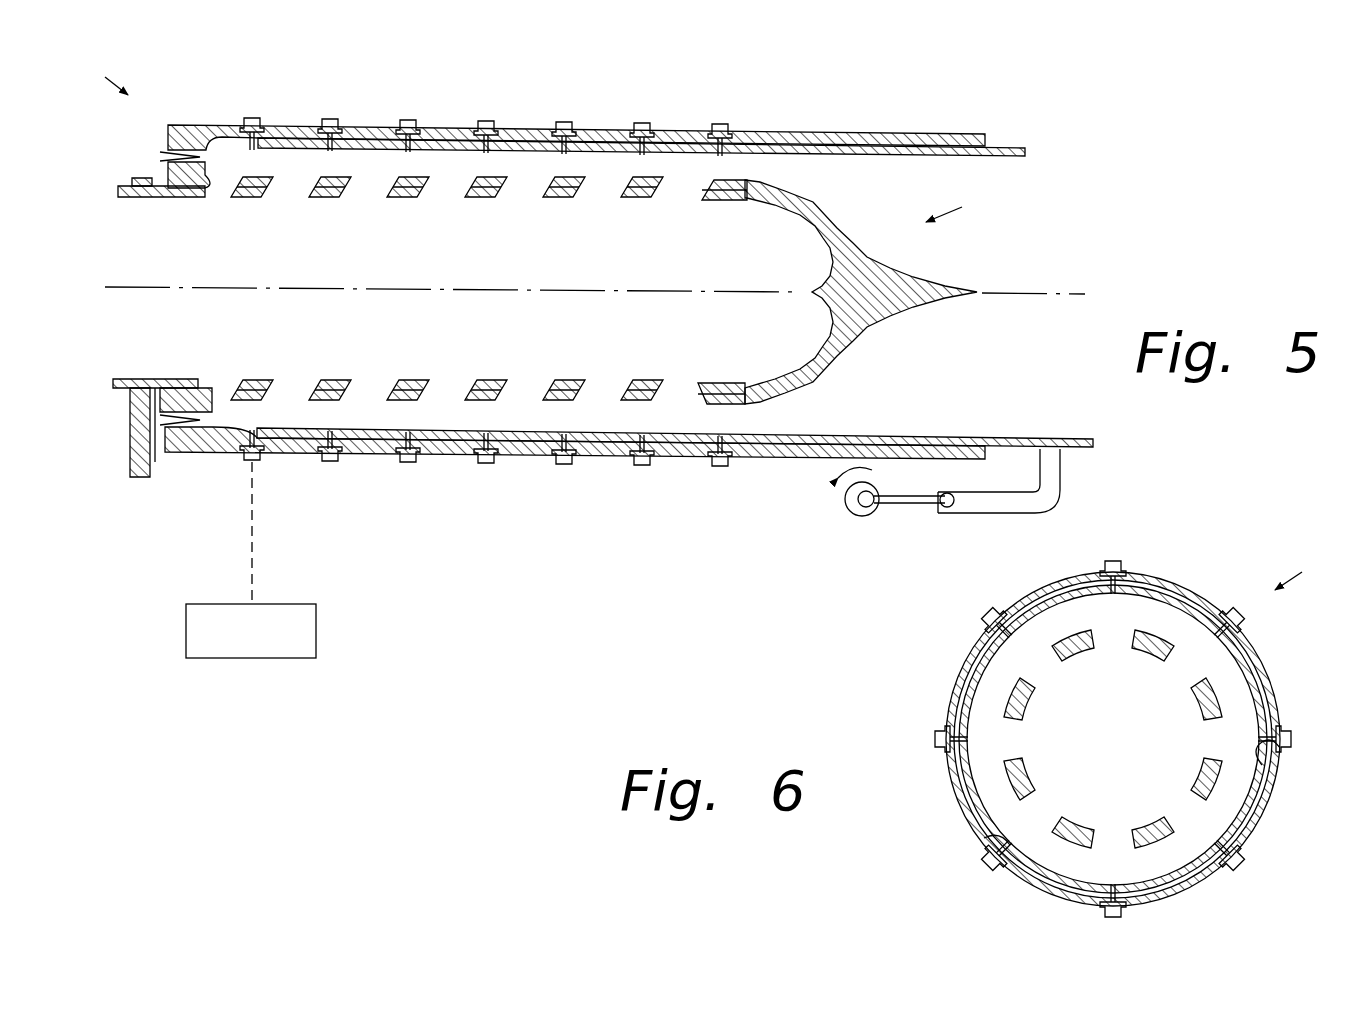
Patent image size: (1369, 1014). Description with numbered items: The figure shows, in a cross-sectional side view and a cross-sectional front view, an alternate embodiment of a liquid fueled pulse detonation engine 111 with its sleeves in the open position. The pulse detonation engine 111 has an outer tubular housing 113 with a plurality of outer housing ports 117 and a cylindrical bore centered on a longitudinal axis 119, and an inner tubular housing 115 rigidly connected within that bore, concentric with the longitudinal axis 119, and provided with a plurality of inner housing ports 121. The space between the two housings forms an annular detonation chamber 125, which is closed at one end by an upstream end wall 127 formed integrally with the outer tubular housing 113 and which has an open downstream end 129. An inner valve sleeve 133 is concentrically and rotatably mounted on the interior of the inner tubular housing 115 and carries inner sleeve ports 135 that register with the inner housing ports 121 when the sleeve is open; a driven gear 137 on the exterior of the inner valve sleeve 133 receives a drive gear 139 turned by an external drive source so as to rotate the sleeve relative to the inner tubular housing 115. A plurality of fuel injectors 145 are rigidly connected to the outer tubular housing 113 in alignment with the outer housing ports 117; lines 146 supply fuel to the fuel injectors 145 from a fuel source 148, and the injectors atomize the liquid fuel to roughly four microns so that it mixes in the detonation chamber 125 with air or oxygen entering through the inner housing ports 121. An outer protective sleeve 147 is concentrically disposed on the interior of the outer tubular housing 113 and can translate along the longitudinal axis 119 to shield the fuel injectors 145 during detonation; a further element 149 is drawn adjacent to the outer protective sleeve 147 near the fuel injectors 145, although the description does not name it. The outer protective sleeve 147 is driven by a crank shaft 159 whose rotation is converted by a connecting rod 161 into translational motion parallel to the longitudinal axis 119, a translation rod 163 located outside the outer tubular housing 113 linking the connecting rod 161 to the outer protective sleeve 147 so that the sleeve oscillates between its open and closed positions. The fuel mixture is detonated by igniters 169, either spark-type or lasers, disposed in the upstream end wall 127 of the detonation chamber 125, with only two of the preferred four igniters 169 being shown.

In FIG. 5, the pulse detonation engine 111 is at (98, 79).
In FIG. 6, the pulse detonation engine 111 is at (1314, 573).
In FIG. 5, the outer tubular housing 113 is at (865, 133).
In FIG. 6, the outer tubular housing 113 is at (1175, 586).
In FIG. 5, the inner tubular housing 115 is at (810, 205).
In FIG. 6, the inner tubular housing 115 is at (1065, 645).
In FIG. 5, the outer housing ports 117 is at (333, 125).
In FIG. 6, the outer housing ports 117 is at (942, 745).
In FIG. 5, the longitudinal axis 119 is at (1025, 293).
In FIG. 5, the inner housing ports 121 is at (572, 198).
In FIG. 6, the inner housing ports 121 is at (1180, 668).
In FIG. 5, the annular detonation chamber 125 is at (546, 419).
In FIG. 6, the annular detonation chamber 125 is at (1129, 618).
In FIG. 5, the upstream end wall 127 is at (164, 142).
In FIG. 5, the open downstream end 129 is at (971, 206).
In FIG. 5, the inner valve sleeve 133 is at (720, 200).
In FIG. 6, the inner valve sleeve 133 is at (1030, 776).
In FIG. 5, the inner sleeve ports 135 is at (487, 198).
In FIG. 6, the inner sleeve ports 135 is at (1100, 836).
In FIG. 5, the driven gear 137 is at (130, 394).
In FIG. 5, the drive gear 139 is at (130, 454).
In FIG. 5, the fuel injectors 145 is at (258, 117).
In FIG. 6, the fuel injectors 145 is at (990, 618).
In FIG. 5, the lines 146 is at (252, 552).
In FIG. 5, the outer protective sleeve 147 is at (810, 430).
In FIG. 6, the outer protective sleeve 147 is at (1245, 668).
In FIG. 5, the fuel source 148 is at (186, 628).
In FIG. 5, the insulating liner 149 is at (648, 146).
In FIG. 6, the insulating liner 149 is at (1268, 762).
In FIG. 5, the crank shaft 159 is at (845, 505).
In FIG. 5, the connecting rod 161 is at (915, 505).
In FIG. 5, the translation rod 163 is at (1062, 486).
In FIG. 5, the igniters 169 is at (168, 155).